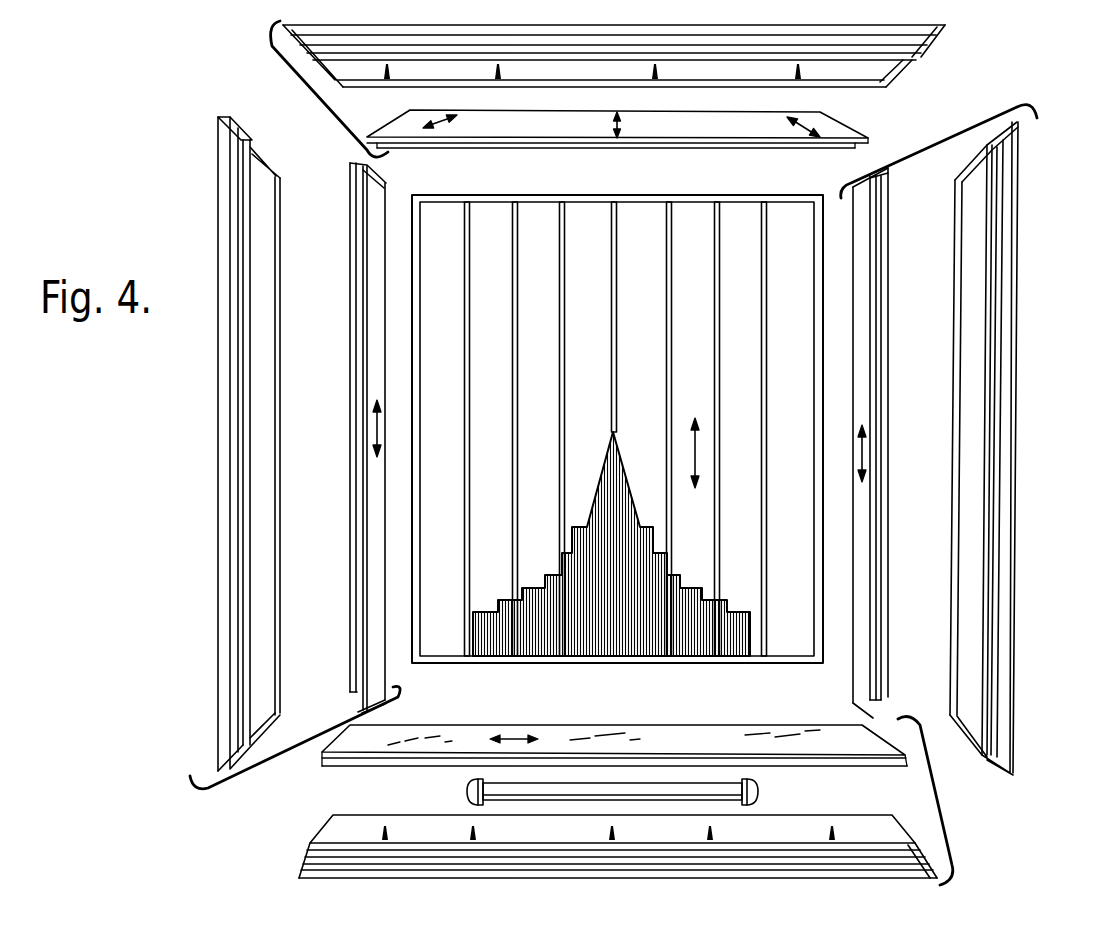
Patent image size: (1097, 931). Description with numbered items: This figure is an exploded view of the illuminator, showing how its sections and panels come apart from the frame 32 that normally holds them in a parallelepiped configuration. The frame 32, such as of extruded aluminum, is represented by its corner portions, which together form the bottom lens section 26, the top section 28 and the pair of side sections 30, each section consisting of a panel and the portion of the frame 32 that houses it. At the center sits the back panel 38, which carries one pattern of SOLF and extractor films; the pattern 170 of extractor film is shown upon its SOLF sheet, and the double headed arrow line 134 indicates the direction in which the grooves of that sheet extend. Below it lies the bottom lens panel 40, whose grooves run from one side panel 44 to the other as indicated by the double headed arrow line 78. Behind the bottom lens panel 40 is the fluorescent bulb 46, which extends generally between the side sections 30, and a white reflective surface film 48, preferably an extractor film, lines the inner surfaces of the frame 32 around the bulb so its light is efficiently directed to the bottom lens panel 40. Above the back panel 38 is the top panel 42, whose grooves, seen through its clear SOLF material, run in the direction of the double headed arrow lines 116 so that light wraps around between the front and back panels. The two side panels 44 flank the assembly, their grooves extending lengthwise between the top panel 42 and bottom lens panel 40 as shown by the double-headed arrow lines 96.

The bottom lens section 26 is at (945, 800).
The top section 28 is at (317, 100).
The side sections 30 is at (930, 140).
The frame 32 is at (934, 52).
The back panel 38 is at (592, 196).
The bottom lens panel 40 is at (728, 725).
The top panel 42 is at (665, 141).
The side panels 44 is at (352, 230).
The fluorescent bulb 46 is at (467, 790).
The white reflective surface film 48 is at (367, 828).
The double headed arrow line 78 is at (513, 736).
The double-headed arrow lines 96 is at (380, 426).
The double headed arrow line 116 is at (445, 124).
The double headed arrow line 134 is at (697, 454).
The pattern of extractor film 170 is at (640, 520).